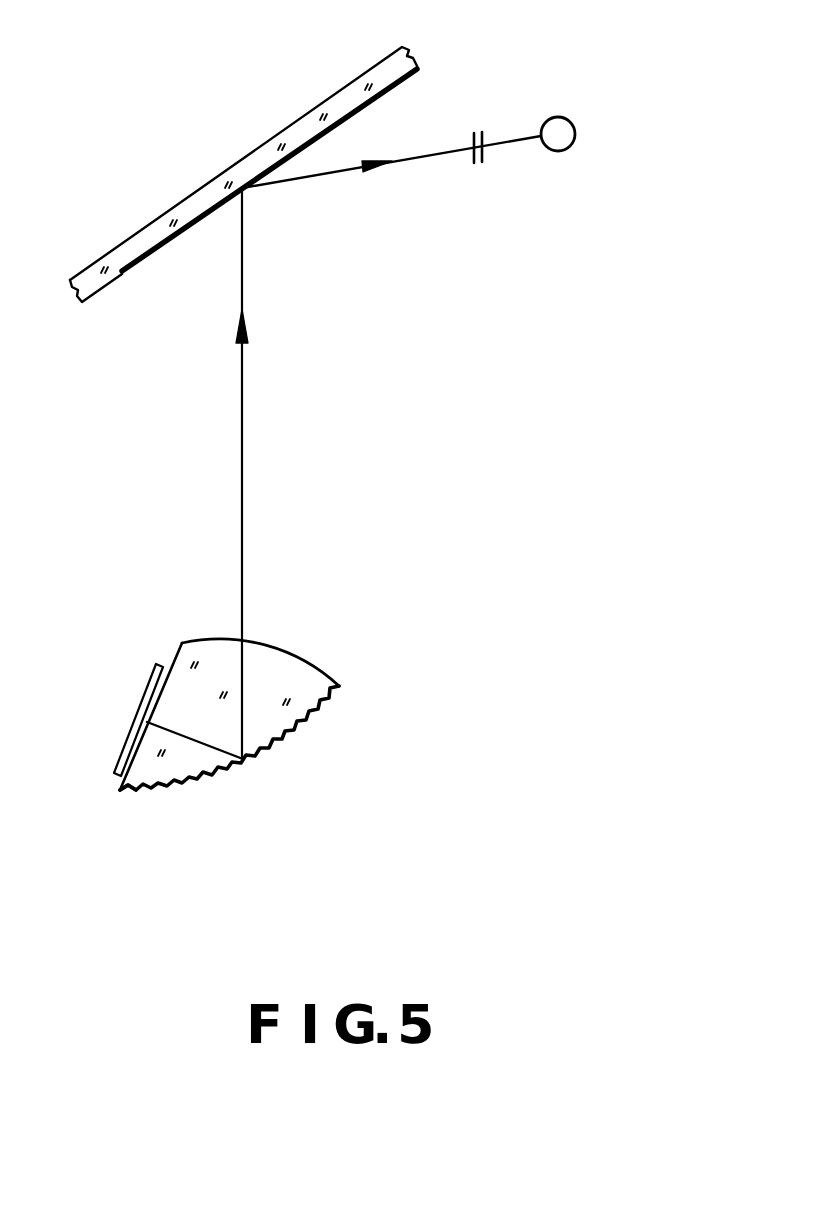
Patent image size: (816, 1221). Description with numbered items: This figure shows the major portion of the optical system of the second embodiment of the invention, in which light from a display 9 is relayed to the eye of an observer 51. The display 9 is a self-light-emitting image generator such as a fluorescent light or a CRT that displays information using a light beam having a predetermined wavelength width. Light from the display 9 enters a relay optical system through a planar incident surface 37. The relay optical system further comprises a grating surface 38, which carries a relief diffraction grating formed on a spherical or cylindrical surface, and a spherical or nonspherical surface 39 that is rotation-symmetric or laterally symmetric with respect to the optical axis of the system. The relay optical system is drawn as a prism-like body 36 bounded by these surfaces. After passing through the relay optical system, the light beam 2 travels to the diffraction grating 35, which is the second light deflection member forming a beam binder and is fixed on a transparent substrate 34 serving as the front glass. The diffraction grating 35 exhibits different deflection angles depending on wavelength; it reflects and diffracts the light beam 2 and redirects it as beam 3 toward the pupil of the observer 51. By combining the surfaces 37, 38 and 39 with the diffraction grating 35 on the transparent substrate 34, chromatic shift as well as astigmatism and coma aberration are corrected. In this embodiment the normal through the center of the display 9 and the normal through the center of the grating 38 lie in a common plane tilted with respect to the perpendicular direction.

The light beam 2 is at (244, 458).
The reflected light beam 3 is at (445, 152).
The display 9 is at (160, 665).
The transparent substrate 34 is at (410, 50).
The second light deflection member 35 is at (350, 114).
The prism 36 is at (268, 680).
The planar incident surface 37 is at (119, 783).
The grating surface 38 is at (232, 770).
The spherical or nonspherical surface 39 is at (210, 640).
The observer 51 is at (557, 118).